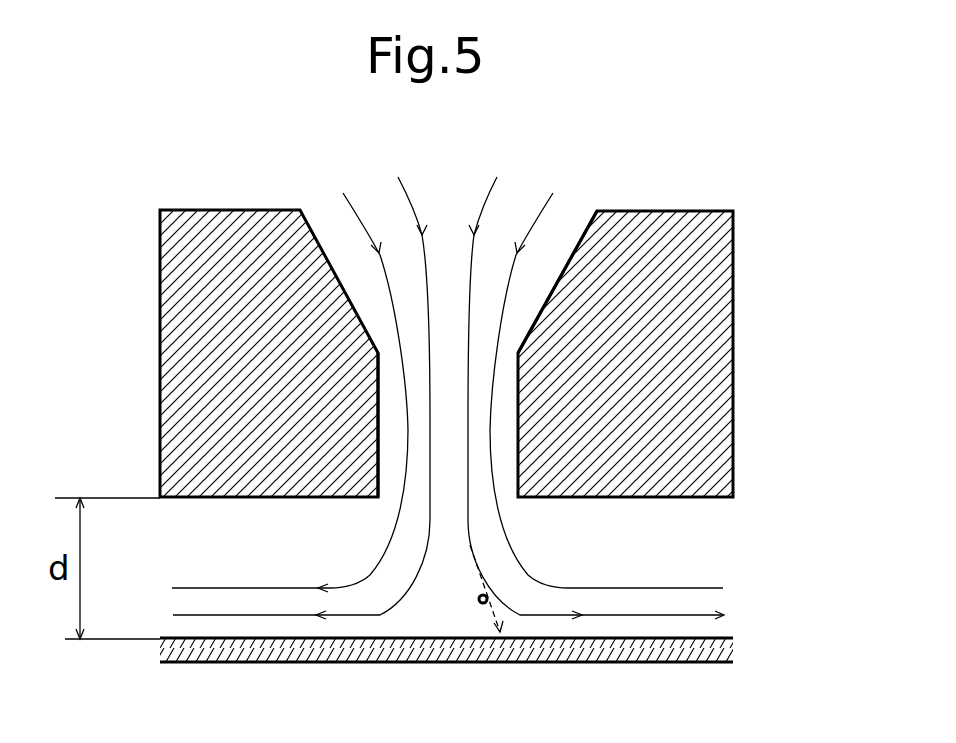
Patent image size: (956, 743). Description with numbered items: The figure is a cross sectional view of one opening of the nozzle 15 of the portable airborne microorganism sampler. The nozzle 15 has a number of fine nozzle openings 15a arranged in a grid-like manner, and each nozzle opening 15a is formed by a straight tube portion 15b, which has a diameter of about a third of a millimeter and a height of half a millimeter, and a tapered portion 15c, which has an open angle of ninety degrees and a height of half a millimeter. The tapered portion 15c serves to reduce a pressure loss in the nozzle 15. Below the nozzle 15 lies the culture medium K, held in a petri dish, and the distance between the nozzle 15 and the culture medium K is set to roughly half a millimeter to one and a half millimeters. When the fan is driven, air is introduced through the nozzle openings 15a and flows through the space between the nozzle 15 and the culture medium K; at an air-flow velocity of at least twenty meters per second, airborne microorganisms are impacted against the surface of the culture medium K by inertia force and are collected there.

The nozzle 15 is at (241, 245).
The nozzle opening 15a is at (407, 415).
The straight tube portion 15b is at (518, 396).
The tapered portion 15c is at (580, 238).
The culture medium K is at (303, 648).